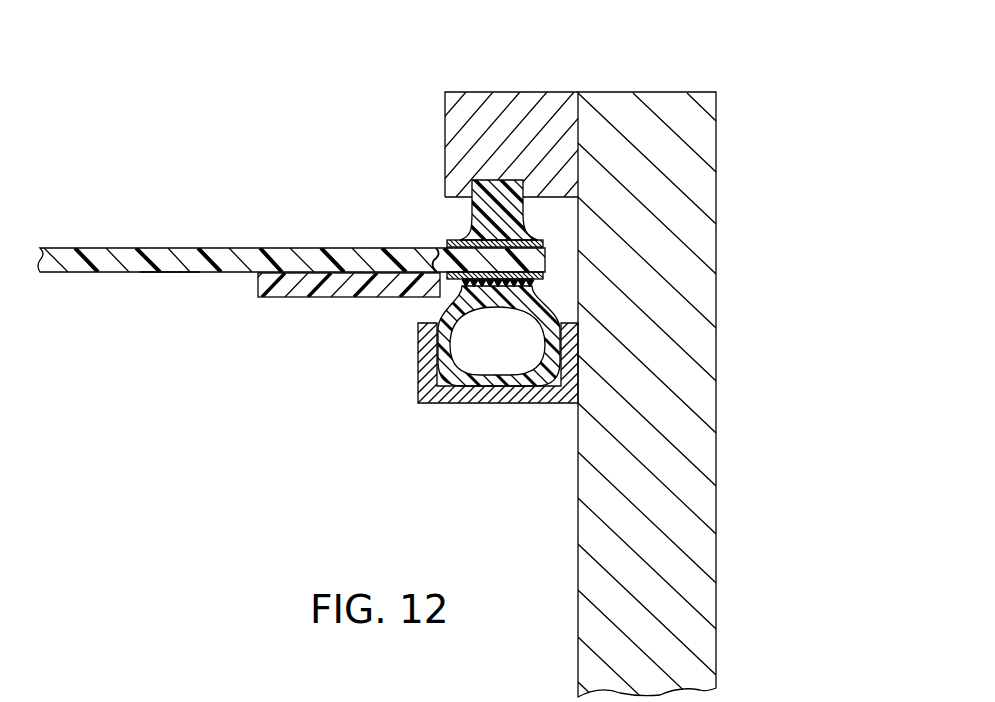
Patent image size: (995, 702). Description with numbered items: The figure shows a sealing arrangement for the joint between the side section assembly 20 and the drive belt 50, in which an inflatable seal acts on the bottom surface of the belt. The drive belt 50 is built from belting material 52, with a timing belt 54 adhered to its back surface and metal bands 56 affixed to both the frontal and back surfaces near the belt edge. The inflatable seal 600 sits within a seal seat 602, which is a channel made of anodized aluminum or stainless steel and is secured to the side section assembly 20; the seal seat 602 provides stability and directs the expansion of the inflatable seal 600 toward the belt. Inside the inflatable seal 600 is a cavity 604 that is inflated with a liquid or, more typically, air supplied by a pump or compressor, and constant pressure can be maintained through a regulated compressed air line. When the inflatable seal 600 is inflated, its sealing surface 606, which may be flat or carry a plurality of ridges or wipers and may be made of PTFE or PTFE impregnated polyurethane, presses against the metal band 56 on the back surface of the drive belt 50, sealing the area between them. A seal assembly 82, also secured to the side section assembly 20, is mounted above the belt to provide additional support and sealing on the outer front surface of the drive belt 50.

The side section assembly 20 is at (718, 364).
The seal assembly 82 is at (530, 92).
The drive belt 50 is at (157, 240).
The belting material 52 is at (171, 275).
The timing belt 54 is at (270, 298).
The metal band 56 is at (447, 276).
The inflatable seal 600 is at (447, 386).
The seal seat 602 is at (489, 404).
The cavity 604 is at (512, 345).
The sealing surface 606 is at (464, 295).